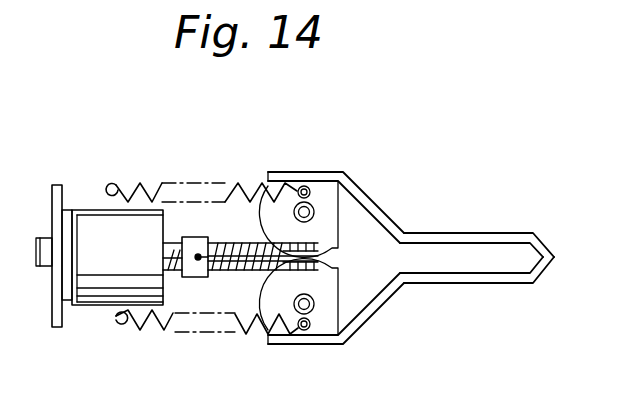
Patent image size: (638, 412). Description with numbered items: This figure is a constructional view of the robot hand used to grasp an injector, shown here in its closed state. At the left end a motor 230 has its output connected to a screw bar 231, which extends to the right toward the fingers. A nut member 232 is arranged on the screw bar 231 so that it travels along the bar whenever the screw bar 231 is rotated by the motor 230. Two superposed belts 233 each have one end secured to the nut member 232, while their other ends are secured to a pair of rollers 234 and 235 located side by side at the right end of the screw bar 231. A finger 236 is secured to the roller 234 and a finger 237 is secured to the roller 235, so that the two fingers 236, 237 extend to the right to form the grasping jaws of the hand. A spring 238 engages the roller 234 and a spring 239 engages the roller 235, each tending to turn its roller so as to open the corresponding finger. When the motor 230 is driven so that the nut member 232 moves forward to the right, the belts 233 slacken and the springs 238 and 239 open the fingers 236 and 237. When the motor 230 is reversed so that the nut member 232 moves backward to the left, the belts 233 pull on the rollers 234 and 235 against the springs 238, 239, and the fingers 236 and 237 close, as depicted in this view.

The motor 230 is at (93, 292).
The screw bar 231 is at (226, 242).
The nut member 232 is at (186, 236).
The belt 233 is at (340, 250).
The roller 234 is at (325, 212).
The roller 235 is at (330, 312).
The finger 236 is at (397, 231).
The finger 237 is at (393, 289).
The spring 238 is at (112, 184).
The spring 239 is at (130, 323).